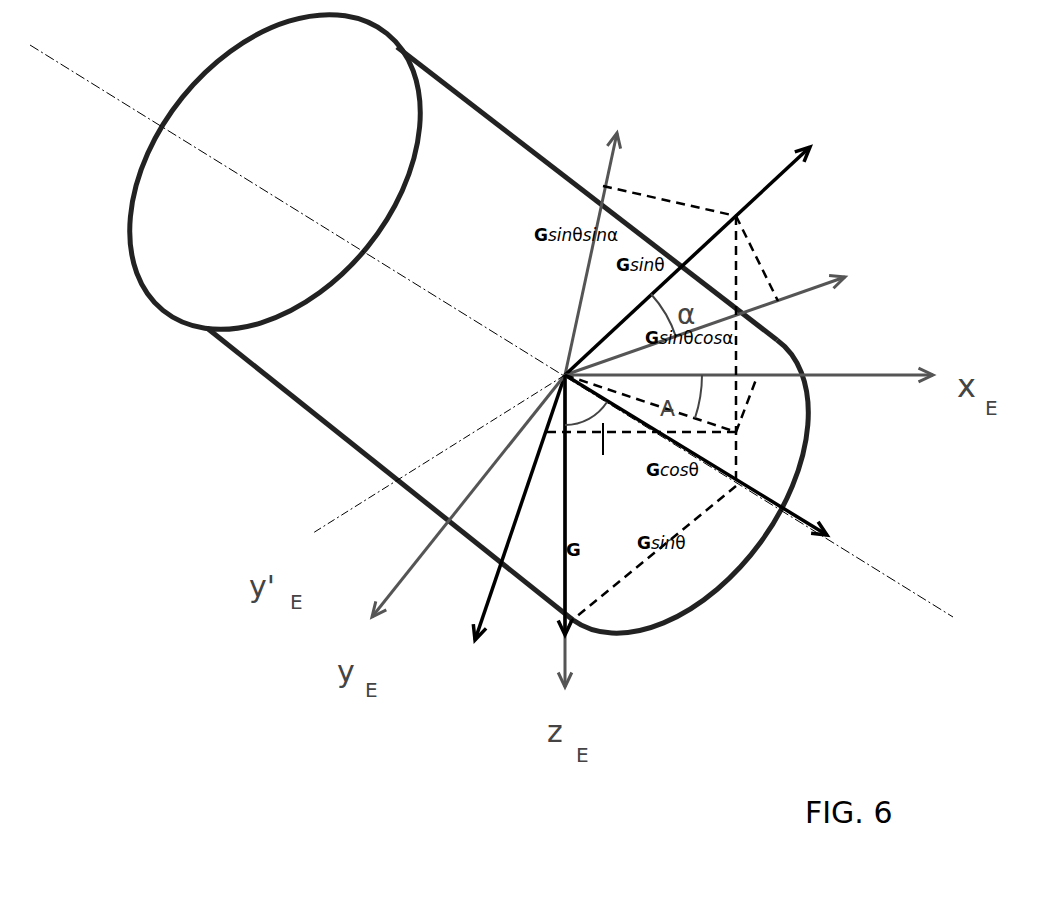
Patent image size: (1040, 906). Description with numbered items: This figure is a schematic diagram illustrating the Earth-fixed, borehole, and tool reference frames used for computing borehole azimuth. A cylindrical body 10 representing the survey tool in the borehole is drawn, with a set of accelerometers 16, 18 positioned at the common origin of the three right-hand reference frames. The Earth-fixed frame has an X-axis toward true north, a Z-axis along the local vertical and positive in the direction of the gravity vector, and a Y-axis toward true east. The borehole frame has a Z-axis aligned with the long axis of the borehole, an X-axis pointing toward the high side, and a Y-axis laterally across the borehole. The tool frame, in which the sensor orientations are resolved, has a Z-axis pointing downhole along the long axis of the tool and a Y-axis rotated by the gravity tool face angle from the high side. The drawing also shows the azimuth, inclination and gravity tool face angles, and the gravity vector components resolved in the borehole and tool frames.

The downhole tool / drill string section 10 is at (243, 370).
The accelerometer sensor 16 is at (465, 367).
The magnetometer sensor 18 is at (465, 367).